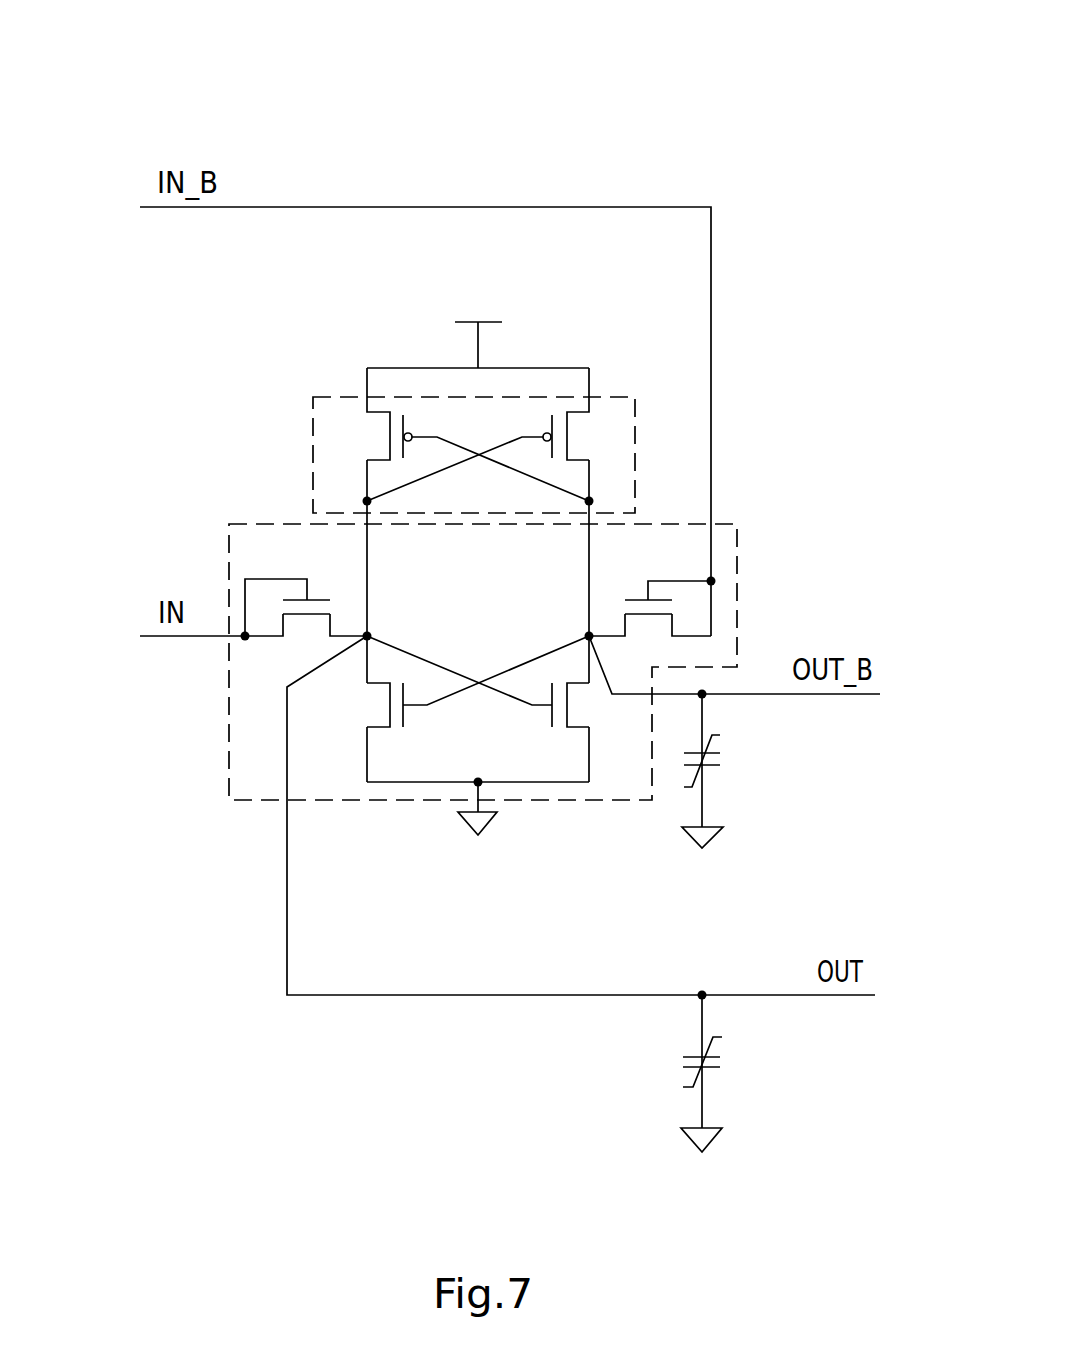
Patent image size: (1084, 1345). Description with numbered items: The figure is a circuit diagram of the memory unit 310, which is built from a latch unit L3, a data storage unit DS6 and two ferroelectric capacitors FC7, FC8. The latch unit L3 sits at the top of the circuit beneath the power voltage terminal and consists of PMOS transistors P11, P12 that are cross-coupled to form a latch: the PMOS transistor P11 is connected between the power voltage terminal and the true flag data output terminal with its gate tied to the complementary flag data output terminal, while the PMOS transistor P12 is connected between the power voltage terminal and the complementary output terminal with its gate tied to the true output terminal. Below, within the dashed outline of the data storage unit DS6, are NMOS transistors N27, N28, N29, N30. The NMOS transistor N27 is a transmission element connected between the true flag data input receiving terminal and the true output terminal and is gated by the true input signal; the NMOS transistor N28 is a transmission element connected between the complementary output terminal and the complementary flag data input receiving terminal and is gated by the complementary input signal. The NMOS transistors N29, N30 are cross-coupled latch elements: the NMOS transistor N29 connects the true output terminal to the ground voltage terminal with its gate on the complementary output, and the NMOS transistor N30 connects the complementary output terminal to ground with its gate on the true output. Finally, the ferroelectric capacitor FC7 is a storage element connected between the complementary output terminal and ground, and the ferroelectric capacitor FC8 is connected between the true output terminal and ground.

The memory unit 310 is at (701, 88).
The latch unit L3 is at (635, 397).
The data storage unit DS6 is at (737, 524).
The PMOS transistor P11 is at (461, 434).
The PMOS transistor P12 is at (496, 434).
The NMOS transistor N27 is at (306, 588).
The NMOS transistor N28 is at (650, 589).
The NMOS transistor N29 is at (458, 681).
The NMOS transistor N30 is at (478, 700).
The ferroelectric capacitor FC7 is at (731, 771).
The ferroelectric capacitor FC8 is at (731, 1073).